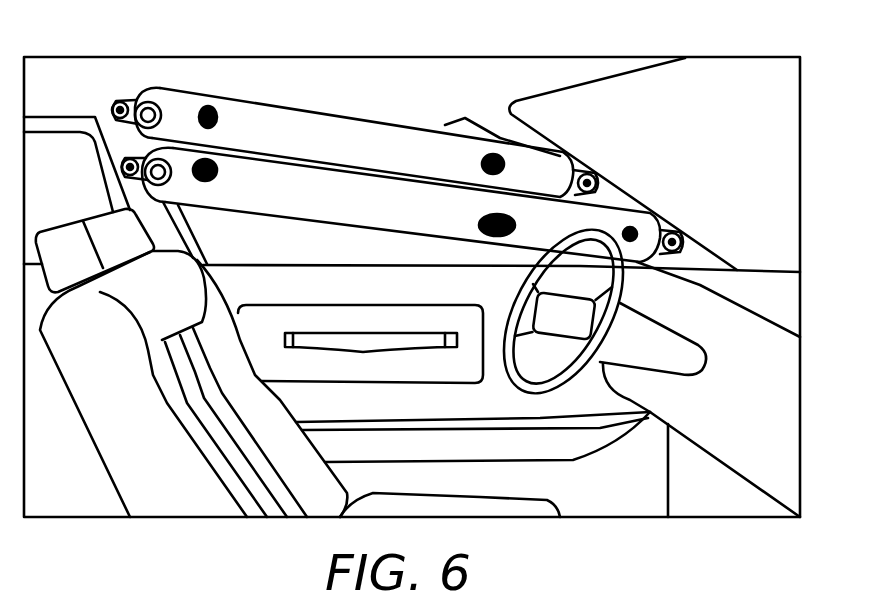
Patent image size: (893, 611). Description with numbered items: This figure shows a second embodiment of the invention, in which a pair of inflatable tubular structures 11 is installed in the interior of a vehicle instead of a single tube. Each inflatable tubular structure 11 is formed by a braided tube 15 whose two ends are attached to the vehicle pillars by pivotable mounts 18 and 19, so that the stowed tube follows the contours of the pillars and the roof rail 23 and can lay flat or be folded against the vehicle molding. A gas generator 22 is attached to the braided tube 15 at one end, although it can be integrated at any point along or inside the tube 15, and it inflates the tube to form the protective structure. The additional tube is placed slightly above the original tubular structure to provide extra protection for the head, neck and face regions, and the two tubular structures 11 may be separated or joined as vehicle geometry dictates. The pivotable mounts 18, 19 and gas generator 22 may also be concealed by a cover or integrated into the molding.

The inflatable tubular structure 11 is at (423, 178).
The braided tube 15 is at (298, 188).
The pivotable mount 18 is at (602, 177).
The pivotable mount 19 is at (112, 153).
The gas generator 22 is at (177, 158).
The roof rail 23 is at (87, 77).